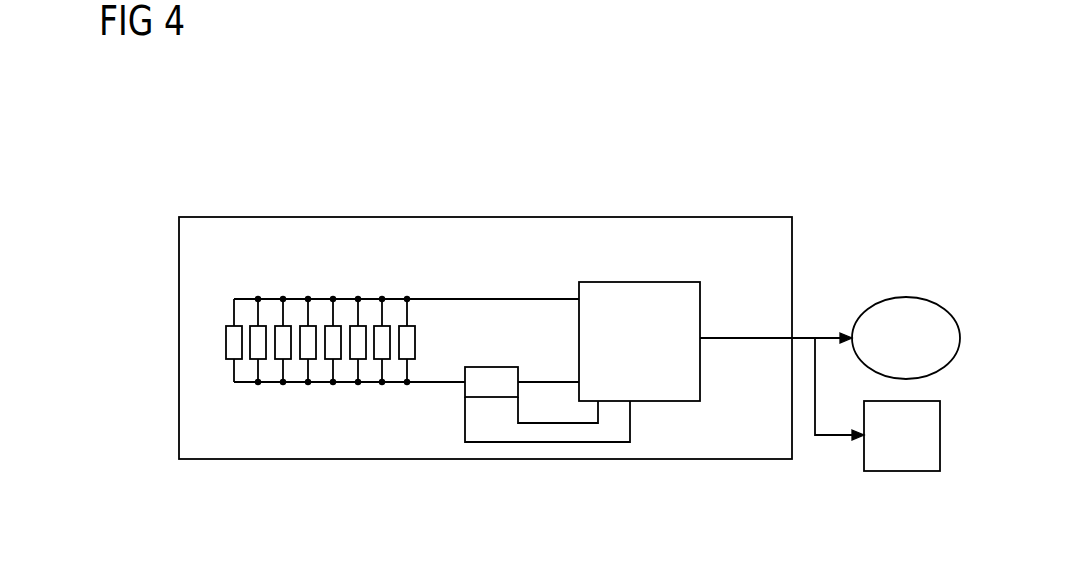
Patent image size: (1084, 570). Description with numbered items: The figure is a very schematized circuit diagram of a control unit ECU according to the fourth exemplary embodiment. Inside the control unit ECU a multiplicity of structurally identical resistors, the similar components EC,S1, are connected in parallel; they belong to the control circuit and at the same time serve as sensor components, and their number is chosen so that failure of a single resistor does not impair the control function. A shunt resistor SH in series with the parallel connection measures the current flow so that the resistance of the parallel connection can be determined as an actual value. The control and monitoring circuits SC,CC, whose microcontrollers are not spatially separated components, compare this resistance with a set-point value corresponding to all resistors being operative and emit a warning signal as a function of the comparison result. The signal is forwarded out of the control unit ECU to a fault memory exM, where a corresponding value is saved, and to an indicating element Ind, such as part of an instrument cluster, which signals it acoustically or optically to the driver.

The control unit ECU is at (160, 258).
The similar components / sensor component EC,S1 is at (428, 400).
The shunt resistor SH is at (490, 377).
The monitoring circuit / control circuit SC,CC is at (622, 246).
The fault memory exM is at (830, 338).
The indicating element Ind is at (877, 404).